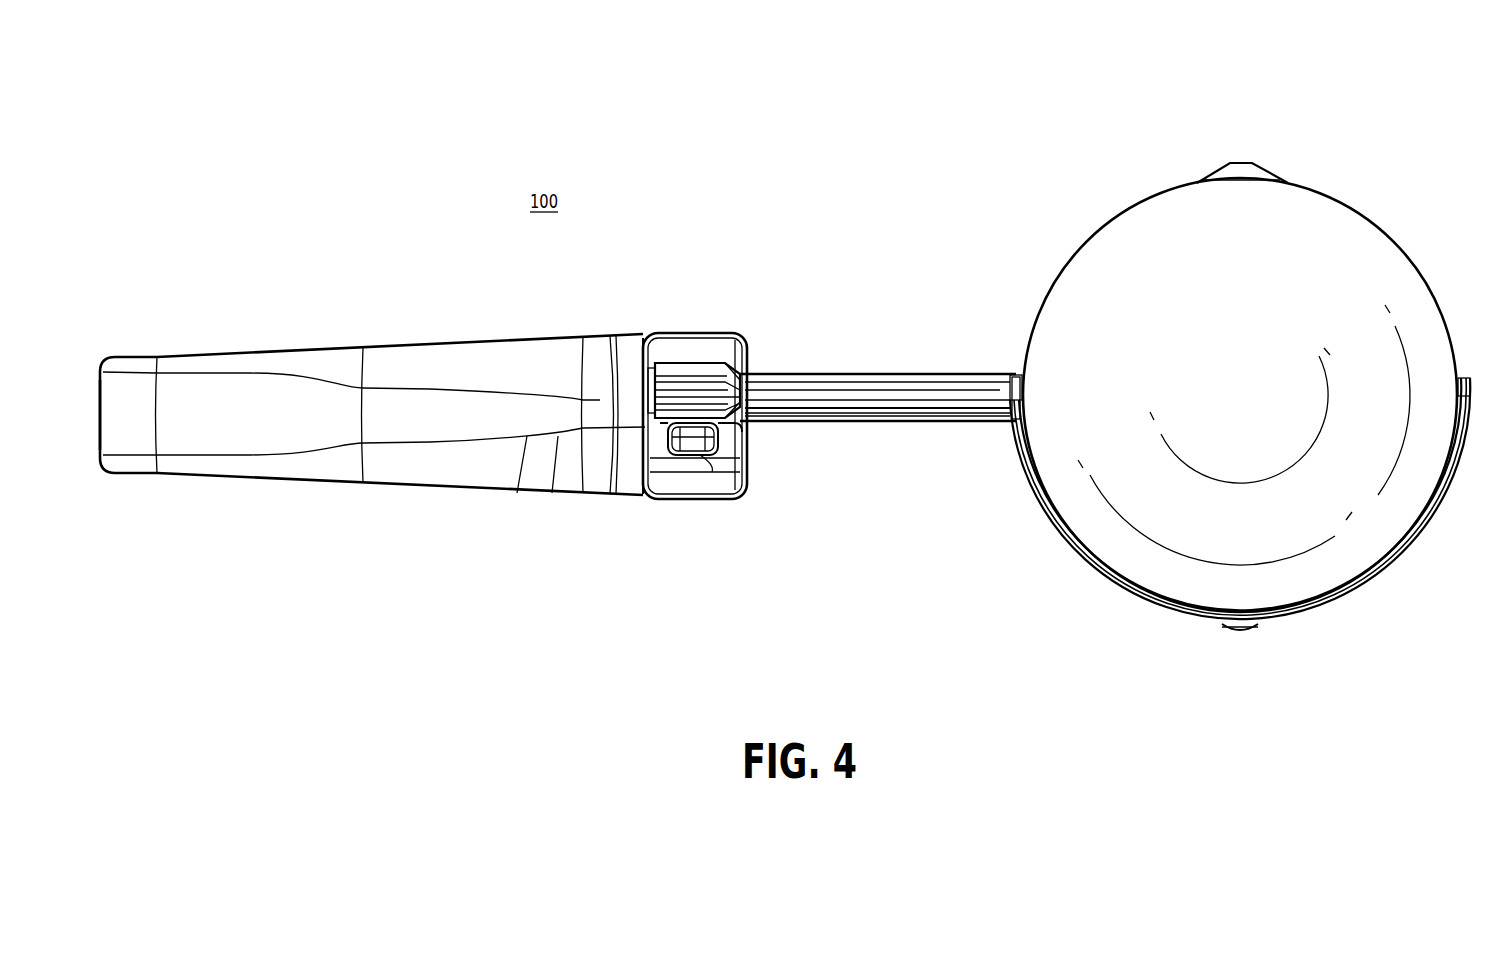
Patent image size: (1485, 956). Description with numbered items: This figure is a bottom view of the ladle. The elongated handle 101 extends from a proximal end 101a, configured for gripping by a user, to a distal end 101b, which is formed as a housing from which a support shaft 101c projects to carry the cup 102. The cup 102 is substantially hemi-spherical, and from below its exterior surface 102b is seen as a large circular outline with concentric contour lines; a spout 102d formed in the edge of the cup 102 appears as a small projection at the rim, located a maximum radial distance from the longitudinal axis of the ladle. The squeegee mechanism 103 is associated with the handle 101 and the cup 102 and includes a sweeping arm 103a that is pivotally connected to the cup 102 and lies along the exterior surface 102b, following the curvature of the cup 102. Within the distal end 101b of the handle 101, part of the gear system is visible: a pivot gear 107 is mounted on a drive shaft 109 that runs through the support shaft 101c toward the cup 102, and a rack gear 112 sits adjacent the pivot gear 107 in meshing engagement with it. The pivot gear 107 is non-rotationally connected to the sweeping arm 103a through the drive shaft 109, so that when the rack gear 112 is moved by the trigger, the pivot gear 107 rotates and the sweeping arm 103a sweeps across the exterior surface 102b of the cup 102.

The handle 101 is at (373, 298).
The proximal end 101a is at (155, 356).
The distal end 101b is at (594, 326).
The support shaft 101c is at (797, 372).
The pivot gear 107 is at (705, 363).
The drive shaft 109 is at (875, 400).
The rack gear 112 is at (688, 455).
The cup 102 is at (1100, 218).
The exterior surface 102b is at (1355, 268).
The spout 102d is at (1245, 170).
The squeegee mechanism 103 is at (862, 542).
The sweeping arm 103a is at (1125, 588).